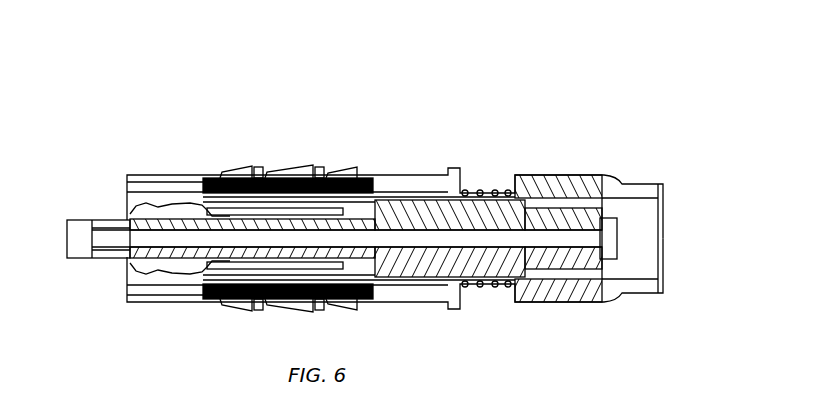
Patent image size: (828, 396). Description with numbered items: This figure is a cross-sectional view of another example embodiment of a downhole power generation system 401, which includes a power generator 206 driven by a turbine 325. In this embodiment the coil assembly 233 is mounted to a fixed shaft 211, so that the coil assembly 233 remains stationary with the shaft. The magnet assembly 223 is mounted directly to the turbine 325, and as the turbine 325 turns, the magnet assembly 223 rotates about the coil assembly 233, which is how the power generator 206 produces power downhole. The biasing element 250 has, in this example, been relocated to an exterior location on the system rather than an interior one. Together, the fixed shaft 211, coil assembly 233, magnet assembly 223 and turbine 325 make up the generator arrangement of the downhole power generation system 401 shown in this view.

The downhole power generation system 401 is at (326, 93).
The fixed shaft 211 is at (93, 217).
The magnet assembly 223 is at (217, 178).
The power generator 206 is at (272, 152).
The turbine 325 is at (313, 165).
The biasing element 250 is at (493, 192).
The coil assembly 233 is at (262, 265).